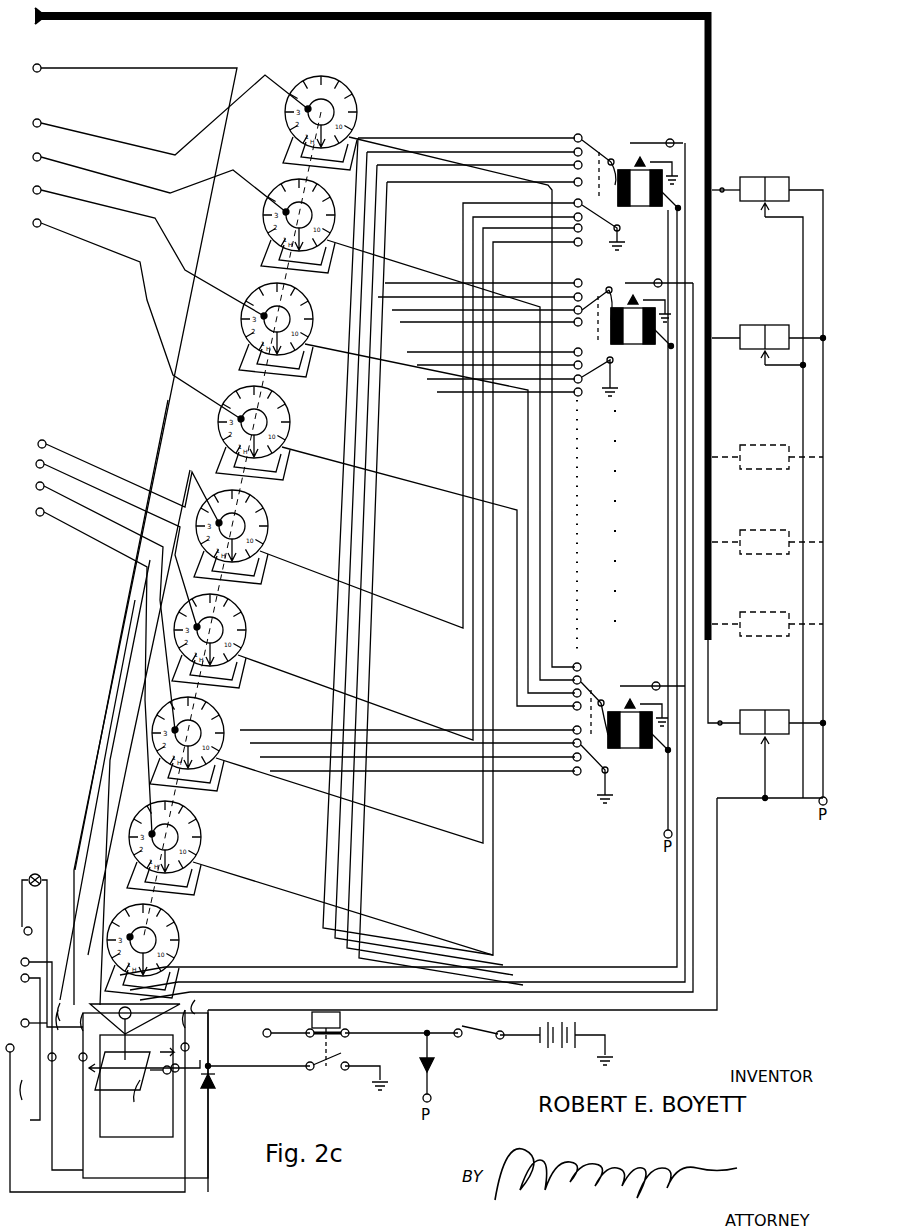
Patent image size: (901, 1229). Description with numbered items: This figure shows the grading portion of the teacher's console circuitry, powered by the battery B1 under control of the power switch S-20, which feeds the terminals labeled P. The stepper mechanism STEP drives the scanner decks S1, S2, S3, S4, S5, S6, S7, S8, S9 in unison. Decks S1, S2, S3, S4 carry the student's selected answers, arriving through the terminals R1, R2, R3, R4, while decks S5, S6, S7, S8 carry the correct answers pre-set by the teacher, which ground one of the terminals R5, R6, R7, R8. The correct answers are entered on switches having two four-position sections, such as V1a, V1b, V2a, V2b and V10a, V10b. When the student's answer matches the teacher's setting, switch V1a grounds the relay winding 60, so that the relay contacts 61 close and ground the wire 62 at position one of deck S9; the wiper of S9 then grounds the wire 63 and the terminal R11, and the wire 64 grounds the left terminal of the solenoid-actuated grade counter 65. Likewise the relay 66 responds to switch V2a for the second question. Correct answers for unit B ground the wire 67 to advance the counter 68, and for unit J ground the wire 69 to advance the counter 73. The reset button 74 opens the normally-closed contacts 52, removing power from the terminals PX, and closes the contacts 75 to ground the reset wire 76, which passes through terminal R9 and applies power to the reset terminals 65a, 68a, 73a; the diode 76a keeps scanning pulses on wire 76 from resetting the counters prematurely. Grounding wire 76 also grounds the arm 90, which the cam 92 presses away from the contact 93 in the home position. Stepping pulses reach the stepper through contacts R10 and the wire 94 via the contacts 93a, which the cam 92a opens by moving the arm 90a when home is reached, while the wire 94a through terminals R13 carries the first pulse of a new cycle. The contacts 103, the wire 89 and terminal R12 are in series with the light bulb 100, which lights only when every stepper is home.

The scanner deck S1 is at (314, 78).
The scanner deck S2 is at (262, 222).
The scanner deck S3 is at (236, 326).
The scanner deck S4 is at (236, 386).
The scanner deck S5 is at (264, 526).
The scanner deck S6 is at (237, 630).
The scanner deck S7 is at (220, 727).
The scanner deck S8 is at (198, 835).
The scanner deck S9 is at (170, 935).
The terminal R1 is at (170, 115).
The terminal R2 is at (159, 176).
The terminal R3 is at (148, 244).
The terminal R4 is at (137, 312).
The terminal R5 is at (116, 478).
The terminal R6 is at (103, 540).
The terminal R7 is at (92, 603).
The terminal R8 is at (82, 668).
The terminal R9 is at (46, 1058).
The contacts R10 is at (16, 1111).
The terminal R11 is at (128, 534).
The terminal R12 is at (25, 1016).
The terminals R13 is at (22, 1047).
The correct-answer switch section V1a is at (598, 153).
The correct-answer switch section V1b is at (599, 224).
The correct-answer switch section V2a is at (594, 299).
The correct-answer switch section V2b is at (596, 381).
The correct-answer switch section V10a is at (600, 689).
The correct-answer switch section V10b is at (593, 766).
The relay winding 60 is at (642, 200).
The relay contacts 61 is at (632, 143).
The wire 62 is at (688, 262).
The wire 63 is at (106, 694).
The wire 64 is at (729, 209).
The grade counter 65 is at (786, 177).
The reset terminal 65a is at (772, 218).
The relay 66 is at (635, 350).
The wire 67 is at (720, 340).
The grade counter 68 is at (790, 312).
The reset terminal 68a is at (764, 362).
The wire 69 is at (718, 725).
The grade counter 73 is at (785, 710).
The reset terminal 73a is at (772, 746).
The reset button 74 is at (326, 1039).
The normally-open contacts 75 is at (307, 1062).
The reset wire 76 is at (802, 500).
The diode 76a is at (217, 1082).
The wire 89 is at (21, 1125).
The arm 90 is at (71, 1004).
The arm 90a is at (203, 1009).
The cam 92 is at (110, 1002).
The cam 92a is at (156, 1002).
The contact 93 is at (144, 1056).
The contacts 93a is at (189, 1042).
The wire 94 is at (126, 1192).
The wire 94a is at (134, 1136).
The light bulb 100 is at (58, 888).
The contacts 103 is at (62, 995).
The normally-closed contacts 52 is at (316, 1032).
The power switch S-20 is at (478, 1024).
The battery B1 is at (559, 1044).
The terminals PX is at (253, 1035).
The stepper mechanism STEP is at (133, 1088).